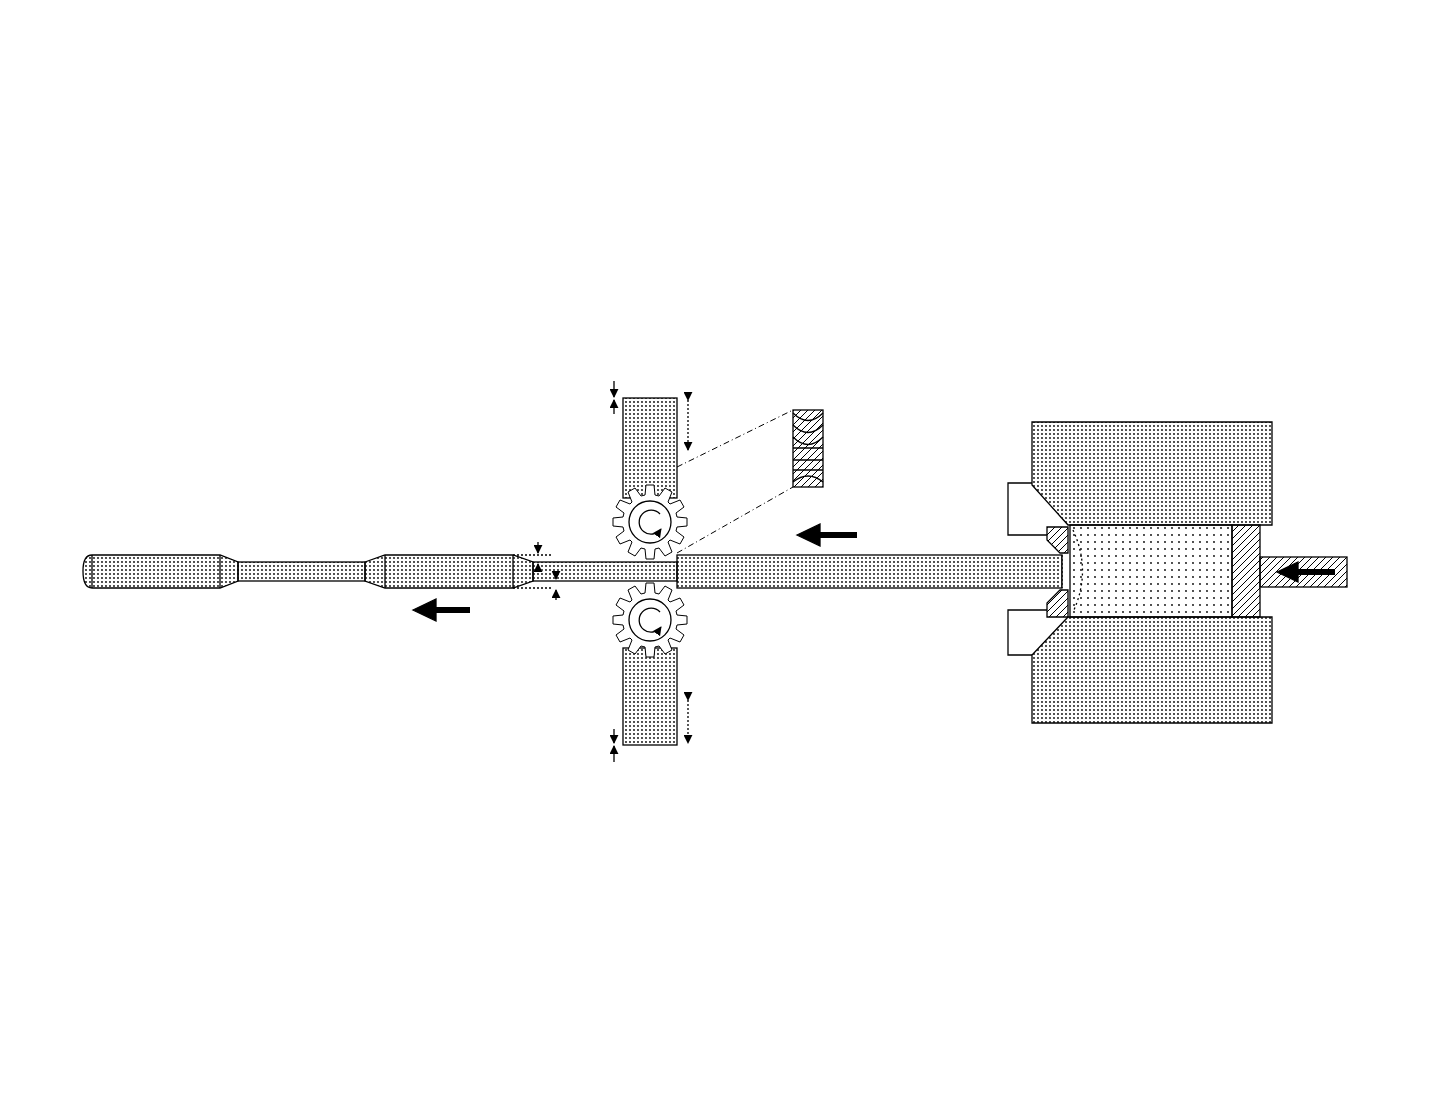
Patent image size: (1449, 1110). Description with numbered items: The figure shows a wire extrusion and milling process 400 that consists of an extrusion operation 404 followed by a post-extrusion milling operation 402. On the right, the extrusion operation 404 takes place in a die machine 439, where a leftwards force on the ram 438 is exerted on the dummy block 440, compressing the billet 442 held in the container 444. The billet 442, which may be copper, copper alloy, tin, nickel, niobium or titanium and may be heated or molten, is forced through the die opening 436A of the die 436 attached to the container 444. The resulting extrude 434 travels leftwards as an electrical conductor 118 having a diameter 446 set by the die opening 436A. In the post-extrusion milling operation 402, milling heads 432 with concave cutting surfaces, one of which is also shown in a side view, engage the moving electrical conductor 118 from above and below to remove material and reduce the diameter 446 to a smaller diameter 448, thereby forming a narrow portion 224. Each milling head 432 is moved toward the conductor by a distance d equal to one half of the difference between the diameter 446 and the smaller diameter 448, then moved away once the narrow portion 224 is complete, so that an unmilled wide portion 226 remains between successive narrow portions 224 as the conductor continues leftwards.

The wire extrusion and milling process 400 is at (246, 184).
The post-extrusion milling operation 402 is at (508, 340).
The extrusion operation 404 is at (1026, 340).
The electrical conductor 118 is at (828, 622).
The narrow portion 224 is at (615, 562).
The wide portion 226 is at (440, 562).
The milling head 432 is at (840, 457).
The extrude 434 is at (998, 552).
The die 436 is at (1044, 598).
The die opening 436A is at (1072, 598).
The ram 438 is at (1305, 556).
The die machine 439 is at (1238, 366).
The dummy block 440 is at (1263, 600).
The billet 442 is at (1151, 571).
The container 444 is at (1140, 572).
The diameter 446 is at (728, 591).
The smaller diameter 448 is at (302, 547).